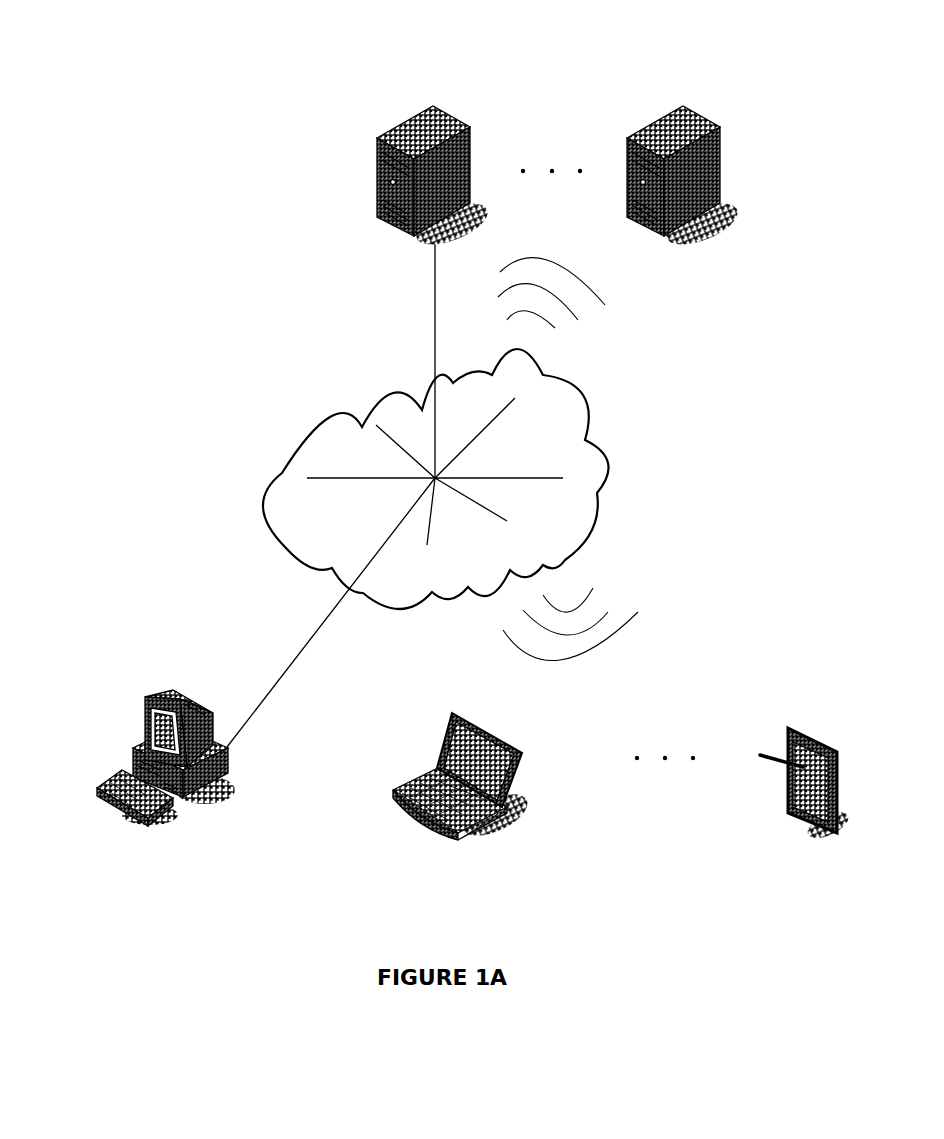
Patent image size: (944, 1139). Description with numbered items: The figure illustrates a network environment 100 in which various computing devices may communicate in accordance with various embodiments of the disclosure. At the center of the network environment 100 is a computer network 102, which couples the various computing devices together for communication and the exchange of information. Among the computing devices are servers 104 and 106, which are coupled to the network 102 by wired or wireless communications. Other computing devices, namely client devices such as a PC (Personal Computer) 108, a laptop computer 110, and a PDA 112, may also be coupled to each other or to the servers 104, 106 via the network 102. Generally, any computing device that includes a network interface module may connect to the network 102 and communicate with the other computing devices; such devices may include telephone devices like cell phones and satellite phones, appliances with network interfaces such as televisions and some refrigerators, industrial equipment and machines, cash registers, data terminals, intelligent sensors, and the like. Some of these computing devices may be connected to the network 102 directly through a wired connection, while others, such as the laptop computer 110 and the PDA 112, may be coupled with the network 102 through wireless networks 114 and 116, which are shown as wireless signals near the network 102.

The network environment 100 is at (272, 311).
The computer network 102 is at (260, 505).
The server 104 is at (370, 163).
The server 106 is at (645, 120).
The PC (Personal Computer) 108 is at (143, 698).
The laptop computer 110 is at (522, 790).
The PDA 112 is at (825, 735).
The wireless network 114 is at (590, 280).
The wireless network 116 is at (588, 662).